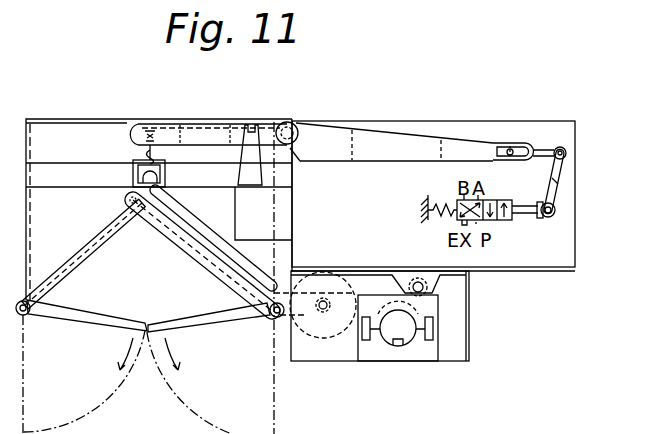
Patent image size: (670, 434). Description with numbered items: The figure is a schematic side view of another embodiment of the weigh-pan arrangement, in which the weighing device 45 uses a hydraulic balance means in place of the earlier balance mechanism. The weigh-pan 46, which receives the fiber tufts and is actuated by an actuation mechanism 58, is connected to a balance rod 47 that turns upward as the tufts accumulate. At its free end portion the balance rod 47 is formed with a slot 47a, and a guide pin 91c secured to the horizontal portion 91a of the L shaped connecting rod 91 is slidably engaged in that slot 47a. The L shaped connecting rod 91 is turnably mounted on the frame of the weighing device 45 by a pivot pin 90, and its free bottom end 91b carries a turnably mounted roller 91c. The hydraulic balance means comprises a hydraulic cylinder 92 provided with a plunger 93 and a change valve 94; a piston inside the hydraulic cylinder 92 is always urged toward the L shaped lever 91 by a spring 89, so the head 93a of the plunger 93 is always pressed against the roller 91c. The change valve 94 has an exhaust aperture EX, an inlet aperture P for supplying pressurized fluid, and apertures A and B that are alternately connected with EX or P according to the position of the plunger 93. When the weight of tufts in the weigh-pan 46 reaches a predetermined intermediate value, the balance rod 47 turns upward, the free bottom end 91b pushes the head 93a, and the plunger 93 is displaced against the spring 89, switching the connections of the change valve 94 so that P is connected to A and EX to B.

The weighing device 45 is at (365, 218).
The weigh-pan 46 is at (210, 322).
The balance rod 47 is at (337, 146).
The slot 47a is at (495, 148).
The actuation mechanism 58 is at (373, 348).
The spring 89 is at (440, 218).
The pivot pin 90 is at (569, 151).
The L shaped connecting rod 91 is at (532, 168).
The horizontal portion 91a is at (549, 153).
The free bottom end 91b is at (557, 203).
The guide pin / roller 91c is at (514, 147).
The hydraulic cylinder 92 is at (494, 222).
The plunger 93 is at (524, 213).
The head 93a is at (546, 182).
The change valve 94 is at (476, 222).